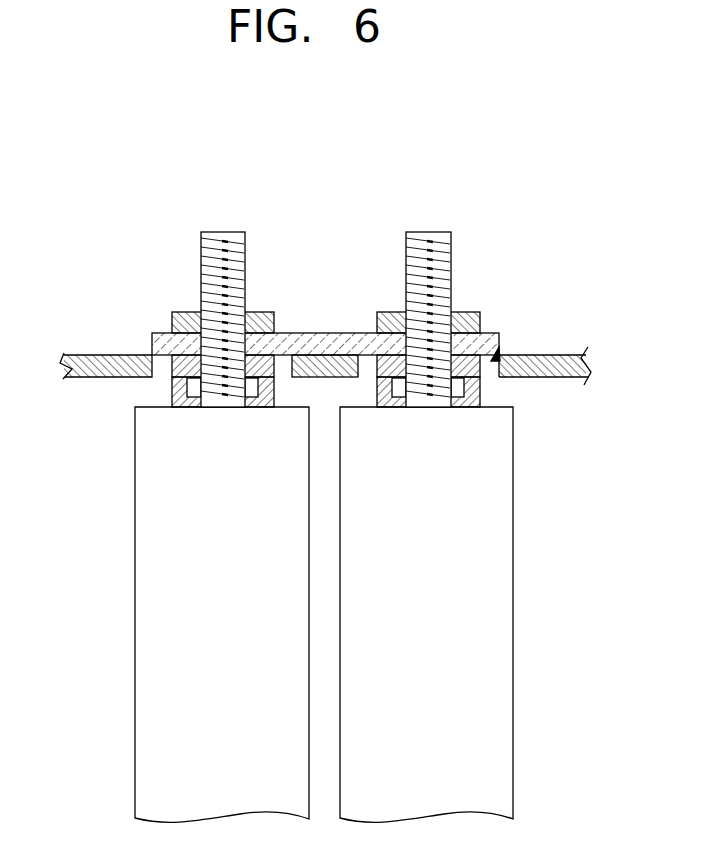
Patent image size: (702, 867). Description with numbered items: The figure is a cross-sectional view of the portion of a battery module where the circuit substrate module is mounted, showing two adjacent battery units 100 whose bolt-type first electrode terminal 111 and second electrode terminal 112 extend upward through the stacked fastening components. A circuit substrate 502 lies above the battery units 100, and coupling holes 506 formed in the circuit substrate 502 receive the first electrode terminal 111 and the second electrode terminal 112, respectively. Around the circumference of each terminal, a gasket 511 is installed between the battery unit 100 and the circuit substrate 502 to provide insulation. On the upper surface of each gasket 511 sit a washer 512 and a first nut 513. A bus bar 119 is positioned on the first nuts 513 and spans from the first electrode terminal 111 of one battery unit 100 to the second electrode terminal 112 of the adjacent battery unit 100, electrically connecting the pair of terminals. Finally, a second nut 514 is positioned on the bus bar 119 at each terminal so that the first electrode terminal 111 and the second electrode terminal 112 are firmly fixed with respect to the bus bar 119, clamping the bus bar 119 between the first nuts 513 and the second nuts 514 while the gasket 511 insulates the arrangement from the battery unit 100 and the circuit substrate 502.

The battery unit 100 is at (203, 699).
The first electrode terminal 111 is at (224, 232).
The second electrode terminal 112 is at (431, 232).
The bus bar 119 is at (327, 333).
The circuit substrate 502 is at (102, 363).
The coupling hole 506 is at (496, 352).
The gasket 511 is at (172, 397).
The washer 512 is at (172, 385).
The first nut 513 is at (182, 360).
The second nut 514 is at (192, 312).